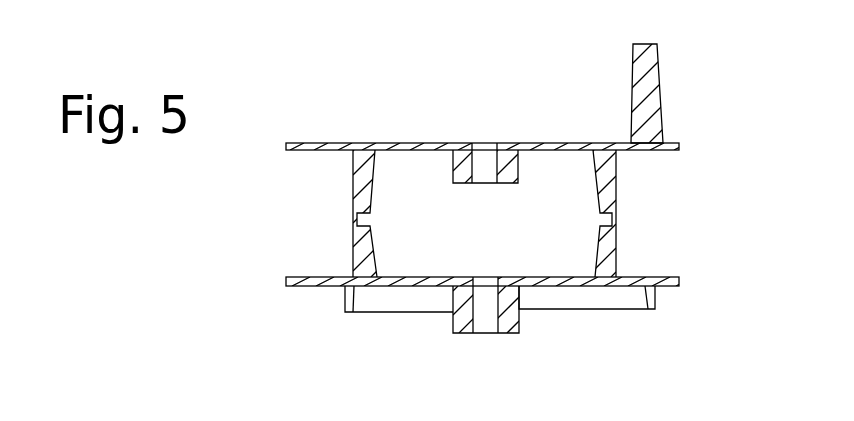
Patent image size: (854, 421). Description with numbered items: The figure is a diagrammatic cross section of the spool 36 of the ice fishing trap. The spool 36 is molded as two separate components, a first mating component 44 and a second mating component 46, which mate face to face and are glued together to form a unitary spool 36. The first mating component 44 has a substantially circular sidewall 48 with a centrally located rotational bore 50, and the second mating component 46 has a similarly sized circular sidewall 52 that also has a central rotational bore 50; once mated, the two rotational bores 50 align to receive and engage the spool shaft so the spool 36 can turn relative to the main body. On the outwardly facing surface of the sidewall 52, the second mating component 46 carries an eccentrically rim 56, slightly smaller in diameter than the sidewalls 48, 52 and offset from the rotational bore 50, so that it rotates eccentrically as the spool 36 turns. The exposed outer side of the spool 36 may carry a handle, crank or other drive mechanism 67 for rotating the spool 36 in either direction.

The spool 36 is at (242, 268).
The first mating component 44 is at (360, 158).
The second mating component 46 is at (363, 273).
The sidewall 48 is at (562, 143).
The rotational bore 50 is at (495, 157).
The sidewall 52 is at (625, 287).
The eccentrically rim 56 is at (657, 300).
The drive mechanism 67 is at (658, 76).